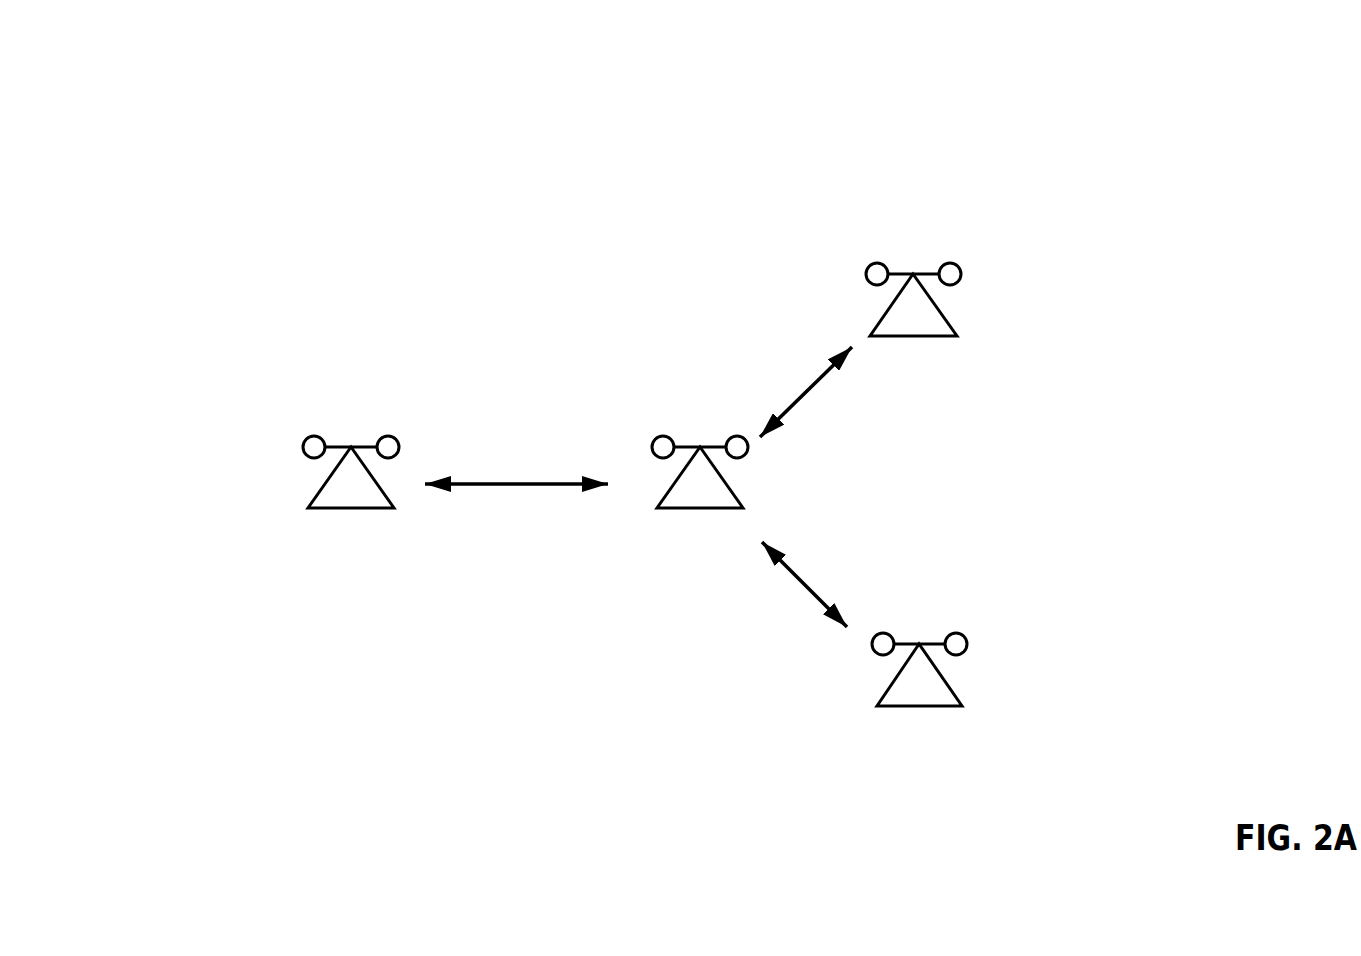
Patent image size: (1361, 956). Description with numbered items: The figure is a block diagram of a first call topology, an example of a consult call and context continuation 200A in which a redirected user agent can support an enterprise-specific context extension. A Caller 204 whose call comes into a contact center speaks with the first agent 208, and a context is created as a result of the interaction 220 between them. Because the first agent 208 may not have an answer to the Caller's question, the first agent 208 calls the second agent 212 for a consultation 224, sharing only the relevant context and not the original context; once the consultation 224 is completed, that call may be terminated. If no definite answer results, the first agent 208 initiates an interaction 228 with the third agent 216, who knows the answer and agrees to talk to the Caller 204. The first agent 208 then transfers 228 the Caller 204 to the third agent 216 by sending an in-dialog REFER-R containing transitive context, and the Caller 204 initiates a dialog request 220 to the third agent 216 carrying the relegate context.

The consult call and context continuation 200A is at (128, 123).
The Caller 204 is at (318, 430).
The Agent 1 208 is at (667, 435).
The Agent 2 212 is at (872, 263).
The Agent 3 216 is at (880, 633).
The interaction 220 is at (498, 485).
The consultation 224 is at (810, 393).
The interaction 228 is at (800, 586).